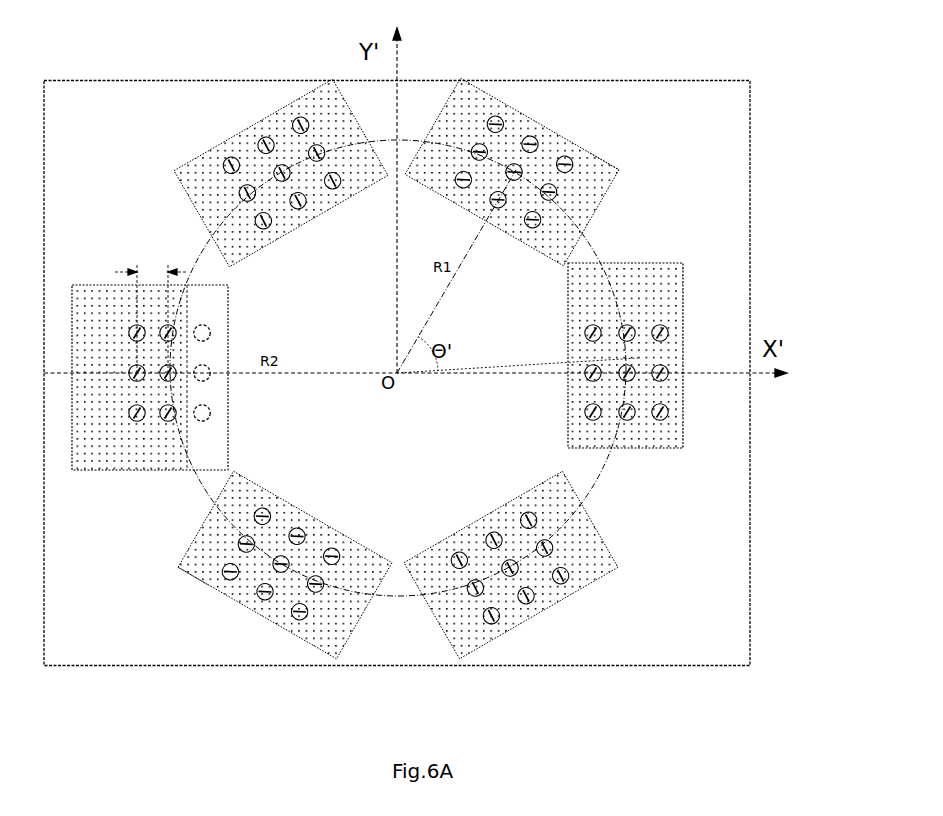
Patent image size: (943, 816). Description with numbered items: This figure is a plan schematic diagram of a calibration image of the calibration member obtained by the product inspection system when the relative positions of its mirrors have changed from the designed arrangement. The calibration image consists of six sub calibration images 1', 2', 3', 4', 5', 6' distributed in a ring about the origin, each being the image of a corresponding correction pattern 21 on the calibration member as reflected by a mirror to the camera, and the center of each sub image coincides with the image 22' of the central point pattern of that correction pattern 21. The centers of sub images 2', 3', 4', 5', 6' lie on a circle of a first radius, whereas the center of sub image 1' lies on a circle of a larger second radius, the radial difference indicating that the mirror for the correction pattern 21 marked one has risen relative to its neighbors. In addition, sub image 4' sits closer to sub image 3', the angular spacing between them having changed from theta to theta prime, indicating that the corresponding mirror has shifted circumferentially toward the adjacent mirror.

The sub calibration image 1' is at (138, 361).
The sub calibration image 2' is at (281, 173).
The sub calibration image 3' is at (512, 172).
The sub calibration image 4' is at (639, 355).
The sub calibration image 5' is at (511, 565).
The sub calibration image 6' is at (285, 565).
The correction pattern 21 is at (608, 160).
The image of the central point pattern 22' is at (165, 590).